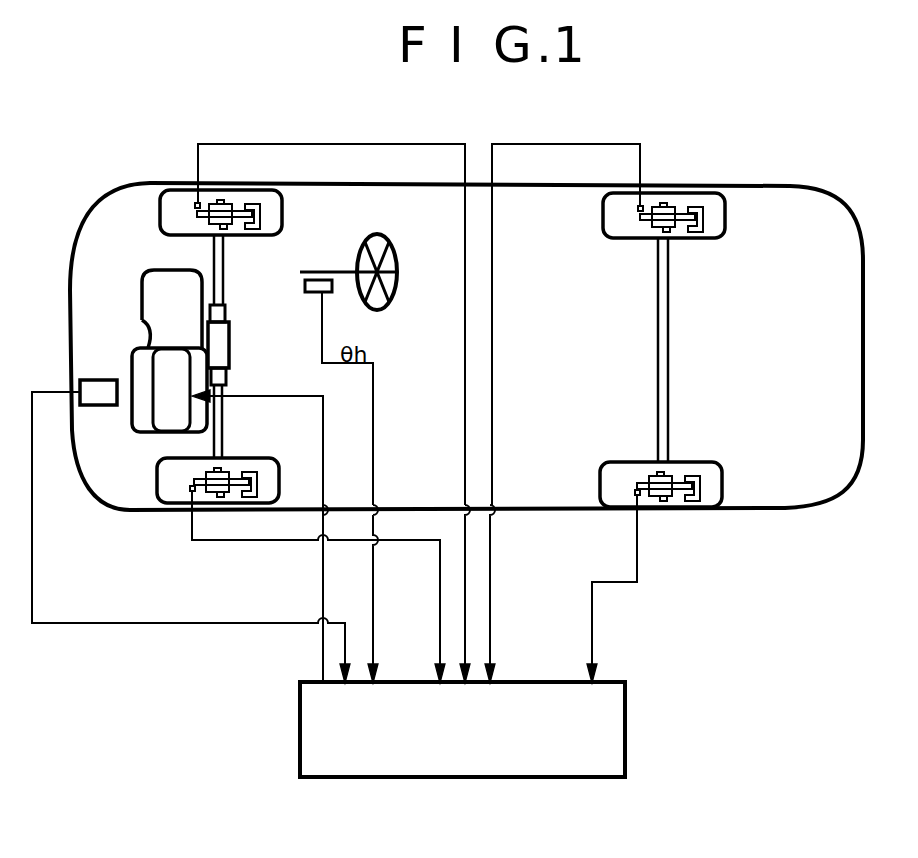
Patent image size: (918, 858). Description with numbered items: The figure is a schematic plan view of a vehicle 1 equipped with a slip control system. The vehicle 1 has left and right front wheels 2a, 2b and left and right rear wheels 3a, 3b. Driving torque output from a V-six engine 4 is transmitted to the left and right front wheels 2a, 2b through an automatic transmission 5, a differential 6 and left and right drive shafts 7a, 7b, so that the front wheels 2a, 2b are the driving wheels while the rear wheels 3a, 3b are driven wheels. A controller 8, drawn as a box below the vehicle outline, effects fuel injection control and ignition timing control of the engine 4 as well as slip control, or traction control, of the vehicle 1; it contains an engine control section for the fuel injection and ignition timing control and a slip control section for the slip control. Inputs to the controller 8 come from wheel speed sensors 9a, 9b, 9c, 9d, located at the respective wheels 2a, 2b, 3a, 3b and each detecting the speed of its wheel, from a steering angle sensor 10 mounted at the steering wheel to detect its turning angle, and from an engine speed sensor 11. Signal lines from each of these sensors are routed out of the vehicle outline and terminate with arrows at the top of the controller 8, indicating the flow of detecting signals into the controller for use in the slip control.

The vehicle 1 is at (390, 180).
The left front wheel 2a is at (157, 483).
The right front wheel 2b is at (160, 226).
The left rear wheel 3a is at (723, 470).
The right rear wheel 3b is at (727, 226).
The V-6 engine 4 is at (132, 426).
The automatic transmission 5 is at (142, 279).
The differential 6 is at (229, 346).
The left drive shaft 7a is at (222, 426).
The right drive shaft 7b is at (213, 258).
The controller 8 is at (465, 777).
The wheel speed sensor 9a is at (190, 490).
The wheel speed sensor 9b is at (195, 205).
The wheel speed sensor 9c is at (635, 495).
The wheel speed sensor 9d is at (642, 206).
The steering angle sensor 10 is at (305, 288).
The engine speed sensor 11 is at (102, 380).